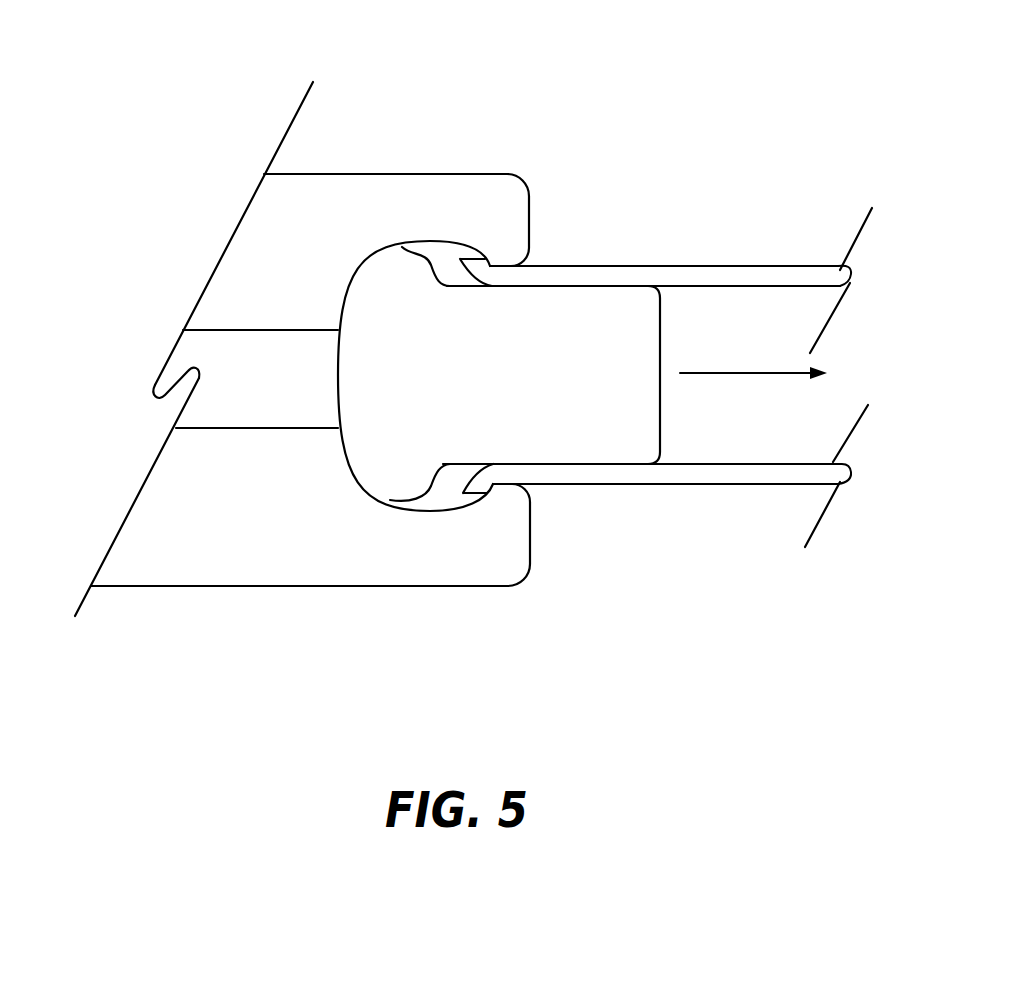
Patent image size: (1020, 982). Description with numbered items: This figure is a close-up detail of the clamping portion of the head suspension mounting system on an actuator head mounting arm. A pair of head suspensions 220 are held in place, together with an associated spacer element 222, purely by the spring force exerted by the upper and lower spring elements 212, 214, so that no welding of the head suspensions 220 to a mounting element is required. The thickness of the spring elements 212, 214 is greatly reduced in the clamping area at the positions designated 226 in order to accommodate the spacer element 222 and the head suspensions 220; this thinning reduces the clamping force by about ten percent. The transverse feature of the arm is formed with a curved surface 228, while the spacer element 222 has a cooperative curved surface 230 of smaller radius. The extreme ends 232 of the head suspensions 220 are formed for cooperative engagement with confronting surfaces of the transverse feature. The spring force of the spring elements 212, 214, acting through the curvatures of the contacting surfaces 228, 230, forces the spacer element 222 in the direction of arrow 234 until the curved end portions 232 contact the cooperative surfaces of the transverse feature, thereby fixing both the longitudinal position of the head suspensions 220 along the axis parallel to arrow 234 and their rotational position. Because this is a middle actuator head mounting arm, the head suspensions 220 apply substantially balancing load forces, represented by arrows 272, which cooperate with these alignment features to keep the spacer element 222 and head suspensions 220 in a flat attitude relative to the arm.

The upper spring element 212 is at (295, 233).
The lower spring element 214 is at (288, 522).
The head suspension 220 is at (747, 277).
The spacer element 222 is at (593, 358).
The thinned clamping area 226 is at (432, 203).
The curved surface 228 is at (402, 245).
The cooperative curved surface 230 is at (333, 380).
The extreme end 232 is at (483, 488).
The arrow 234 is at (753, 360).
The load force arrow 272 is at (662, 252).